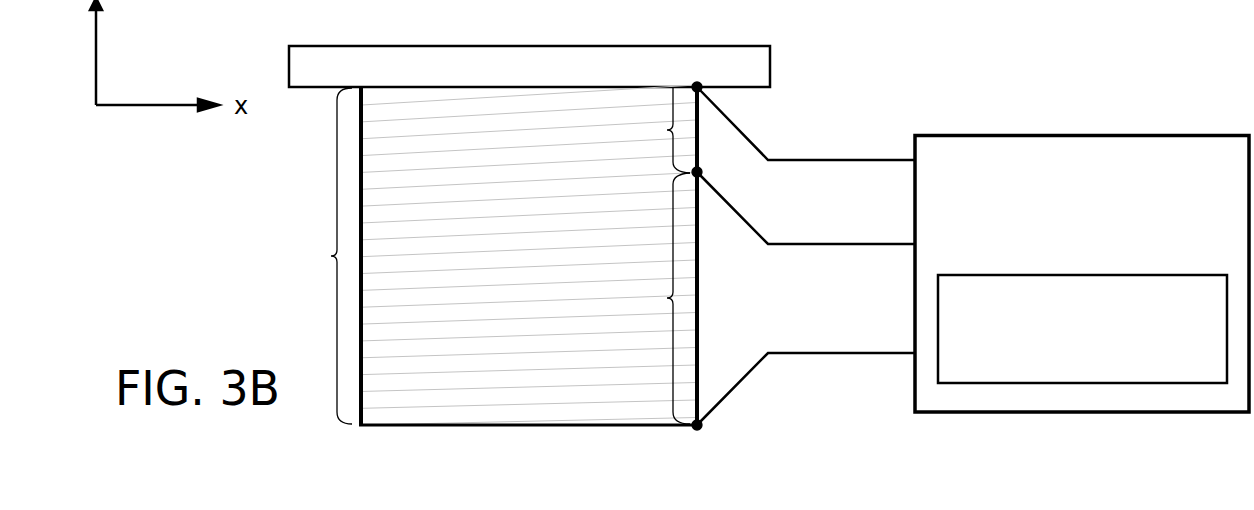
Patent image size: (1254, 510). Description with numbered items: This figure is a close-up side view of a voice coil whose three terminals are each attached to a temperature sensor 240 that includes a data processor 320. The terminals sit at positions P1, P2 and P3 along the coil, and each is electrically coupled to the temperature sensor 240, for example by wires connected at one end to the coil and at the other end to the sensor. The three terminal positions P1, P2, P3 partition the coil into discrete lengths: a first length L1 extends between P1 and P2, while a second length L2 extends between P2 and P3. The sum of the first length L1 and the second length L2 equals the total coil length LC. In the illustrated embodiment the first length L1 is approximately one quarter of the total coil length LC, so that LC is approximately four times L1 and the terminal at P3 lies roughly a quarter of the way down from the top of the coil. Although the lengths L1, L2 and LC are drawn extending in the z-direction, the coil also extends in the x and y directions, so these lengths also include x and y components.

The temperature sensor 240 is at (1082, 274).
The data processor 320 is at (1082, 329).
The first terminal position P1 is at (719, 73).
The second terminal position P2 is at (719, 430).
The third terminal position P3 is at (719, 159).
The first length L1 is at (667, 130).
The second length L2 is at (667, 298).
The total coil length LC is at (331, 256).